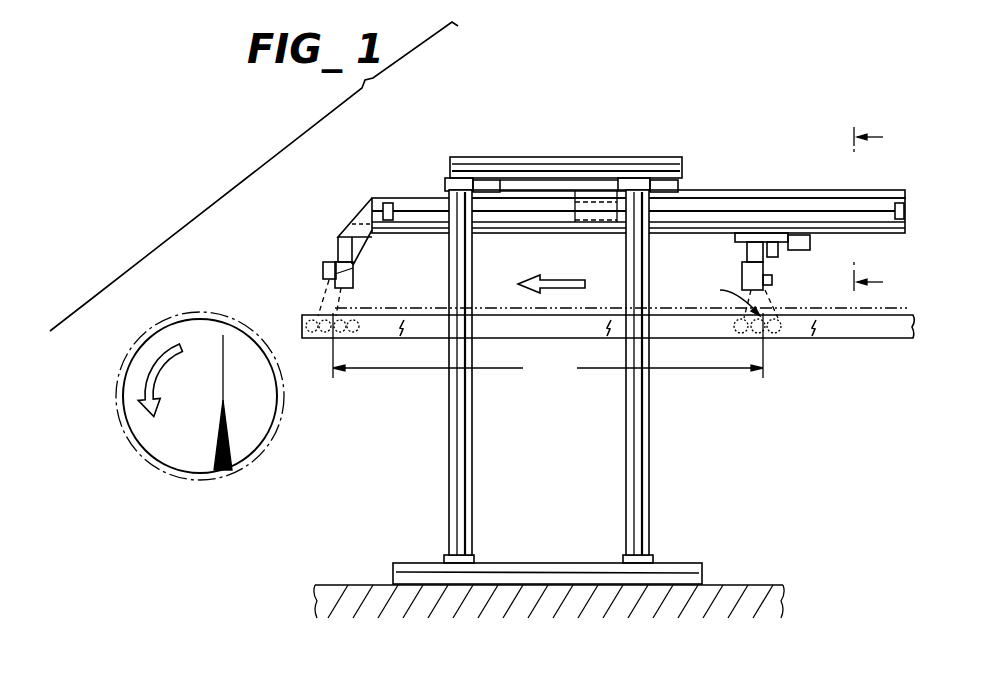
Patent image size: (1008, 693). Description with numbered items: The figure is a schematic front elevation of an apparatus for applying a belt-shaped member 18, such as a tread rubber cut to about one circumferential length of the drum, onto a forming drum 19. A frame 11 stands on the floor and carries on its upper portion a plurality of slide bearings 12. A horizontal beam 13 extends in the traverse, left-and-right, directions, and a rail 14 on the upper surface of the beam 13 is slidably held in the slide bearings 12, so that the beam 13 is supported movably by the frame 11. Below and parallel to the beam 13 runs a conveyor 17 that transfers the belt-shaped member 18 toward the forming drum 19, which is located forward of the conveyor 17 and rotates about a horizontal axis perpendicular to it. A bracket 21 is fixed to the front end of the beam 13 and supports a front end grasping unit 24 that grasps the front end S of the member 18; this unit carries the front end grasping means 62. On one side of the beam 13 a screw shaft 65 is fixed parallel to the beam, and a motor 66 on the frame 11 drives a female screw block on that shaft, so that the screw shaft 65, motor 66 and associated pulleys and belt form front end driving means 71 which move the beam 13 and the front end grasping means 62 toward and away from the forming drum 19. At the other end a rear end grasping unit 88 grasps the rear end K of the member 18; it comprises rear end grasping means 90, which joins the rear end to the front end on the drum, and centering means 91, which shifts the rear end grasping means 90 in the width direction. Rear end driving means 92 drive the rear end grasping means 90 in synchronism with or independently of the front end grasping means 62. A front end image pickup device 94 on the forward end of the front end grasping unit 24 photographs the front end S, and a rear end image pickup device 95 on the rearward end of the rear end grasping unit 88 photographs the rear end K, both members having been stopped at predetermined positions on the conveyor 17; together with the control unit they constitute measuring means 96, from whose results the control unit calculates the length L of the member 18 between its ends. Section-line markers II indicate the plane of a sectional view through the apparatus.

The frame 11 is at (567, 144).
The slide bearings 12 is at (487, 180).
The horizontal beam 13 is at (638, 189).
The rail 14 is at (755, 190).
The conveyor 17 is at (843, 333).
The belt-shaped member 18 is at (274, 387).
The forming drum 19 is at (206, 458).
The bracket 21 is at (358, 215).
The front end grasping unit 24 is at (316, 222).
The front end grasping means 62 is at (342, 261).
The screw shaft 65 is at (538, 217).
The motor 66 is at (600, 222).
The front end driving means 71 is at (592, 166).
The rear end grasping unit 88 is at (782, 289).
The rear end grasping means 90 is at (709, 267).
The centering means 91 is at (760, 273).
The rear end driving means 92 is at (826, 245).
The front end image pickup device 94 is at (323, 268).
The rear end image pickup device 95 is at (777, 280).
The measuring means 96 is at (357, 197).
The rear end K is at (731, 296).
The front end S is at (358, 305).
The length L is at (548, 347).
The section line II is at (877, 211).